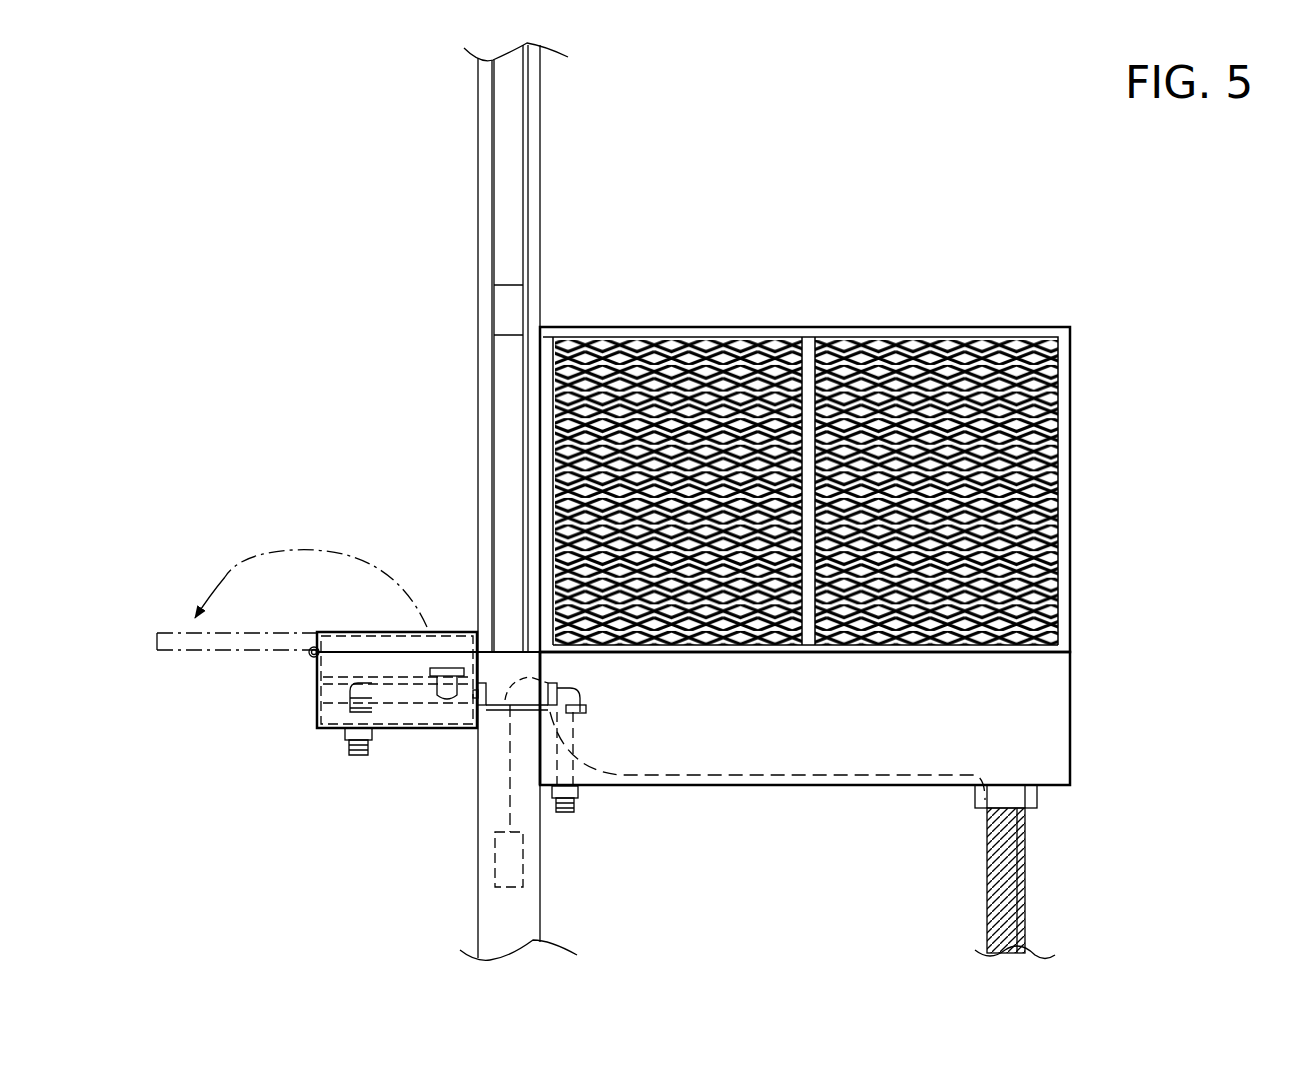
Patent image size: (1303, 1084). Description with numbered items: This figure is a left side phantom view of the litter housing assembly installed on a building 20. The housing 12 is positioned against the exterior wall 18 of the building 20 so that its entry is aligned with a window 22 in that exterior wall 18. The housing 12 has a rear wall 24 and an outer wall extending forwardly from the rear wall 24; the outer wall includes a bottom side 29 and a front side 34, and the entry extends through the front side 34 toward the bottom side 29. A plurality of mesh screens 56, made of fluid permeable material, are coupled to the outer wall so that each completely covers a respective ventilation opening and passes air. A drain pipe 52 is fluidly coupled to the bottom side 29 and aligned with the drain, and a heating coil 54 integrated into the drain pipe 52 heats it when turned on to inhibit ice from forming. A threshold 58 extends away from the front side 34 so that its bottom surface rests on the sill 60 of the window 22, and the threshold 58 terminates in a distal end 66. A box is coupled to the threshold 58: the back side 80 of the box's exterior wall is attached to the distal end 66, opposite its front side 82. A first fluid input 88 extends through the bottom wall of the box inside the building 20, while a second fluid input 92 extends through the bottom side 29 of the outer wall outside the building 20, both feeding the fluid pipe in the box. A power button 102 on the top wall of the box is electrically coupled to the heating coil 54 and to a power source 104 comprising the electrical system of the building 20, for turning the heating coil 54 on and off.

The housing 12 is at (864, 419).
The exterior wall 18 is at (478, 838).
The building 20 is at (462, 798).
The window 22 is at (478, 270).
The rear wall 24 is at (1070, 440).
The bottom side 29 is at (810, 787).
The front side 34 is at (543, 752).
The drain pipe 52 is at (1025, 860).
The heating coil 54 is at (1017, 830).
The mesh screens 56 is at (873, 385).
The threshold 58 is at (490, 700).
The sill 60 is at (478, 655).
The distal end 66 is at (462, 668).
The back side 80 is at (480, 725).
The front side 82 is at (317, 705).
The first fluid input 88 is at (565, 800).
The second fluid input 92 is at (345, 745).
The power button 102 is at (477, 657).
The power source 104 is at (495, 855).